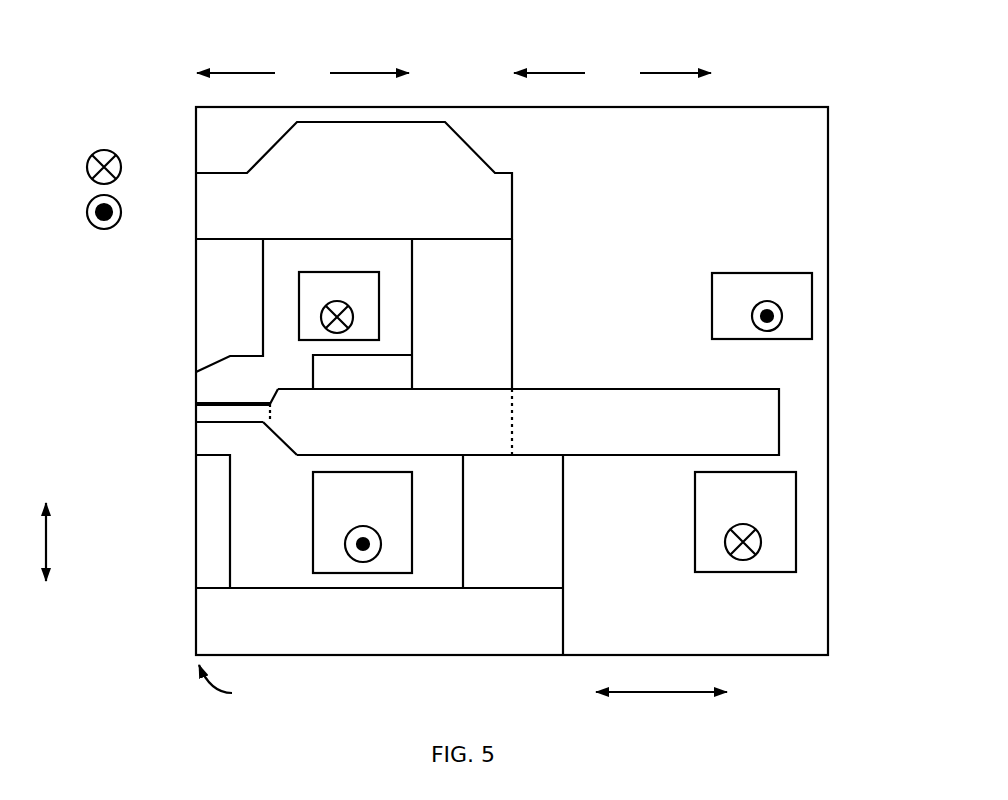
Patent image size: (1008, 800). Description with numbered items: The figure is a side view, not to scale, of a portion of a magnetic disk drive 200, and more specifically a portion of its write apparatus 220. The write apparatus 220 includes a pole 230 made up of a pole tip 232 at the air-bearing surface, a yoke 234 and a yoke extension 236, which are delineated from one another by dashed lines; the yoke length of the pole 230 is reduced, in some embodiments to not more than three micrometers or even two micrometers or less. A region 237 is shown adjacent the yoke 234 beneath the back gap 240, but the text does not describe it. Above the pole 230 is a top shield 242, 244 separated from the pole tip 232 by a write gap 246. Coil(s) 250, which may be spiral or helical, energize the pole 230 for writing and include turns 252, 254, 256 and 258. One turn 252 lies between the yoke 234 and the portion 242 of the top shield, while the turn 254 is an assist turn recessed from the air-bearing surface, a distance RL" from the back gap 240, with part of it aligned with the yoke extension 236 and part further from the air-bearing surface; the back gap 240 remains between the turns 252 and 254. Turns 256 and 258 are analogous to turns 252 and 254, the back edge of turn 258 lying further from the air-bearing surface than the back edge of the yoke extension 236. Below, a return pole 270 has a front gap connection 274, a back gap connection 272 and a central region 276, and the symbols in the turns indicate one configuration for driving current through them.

The magnetic disk drive 200 is at (466, 368).
The write apparatus 220 is at (508, 34).
The pole 230 is at (493, 411).
The pole tip 232 is at (213, 422).
The yoke 234 is at (387, 422).
The yoke extension 236 is at (645, 422).
The nonmagnetic layer 237 is at (362, 372).
The back gap 240 is at (462, 314).
The top shield portion 242 is at (354, 180).
The top shield portion 244 is at (229, 305).
The write gap 246 is at (186, 400).
The coil 250 is at (592, 405).
The turn 252 is at (339, 306).
The turn 254 is at (762, 306).
The turn 256 is at (362, 522).
The turn 258 is at (745, 522).
The return pole 270 is at (352, 581).
The back gap connection 272 is at (513, 555).
The front gap connection 274 is at (196, 553).
The central region 276 is at (379, 611).